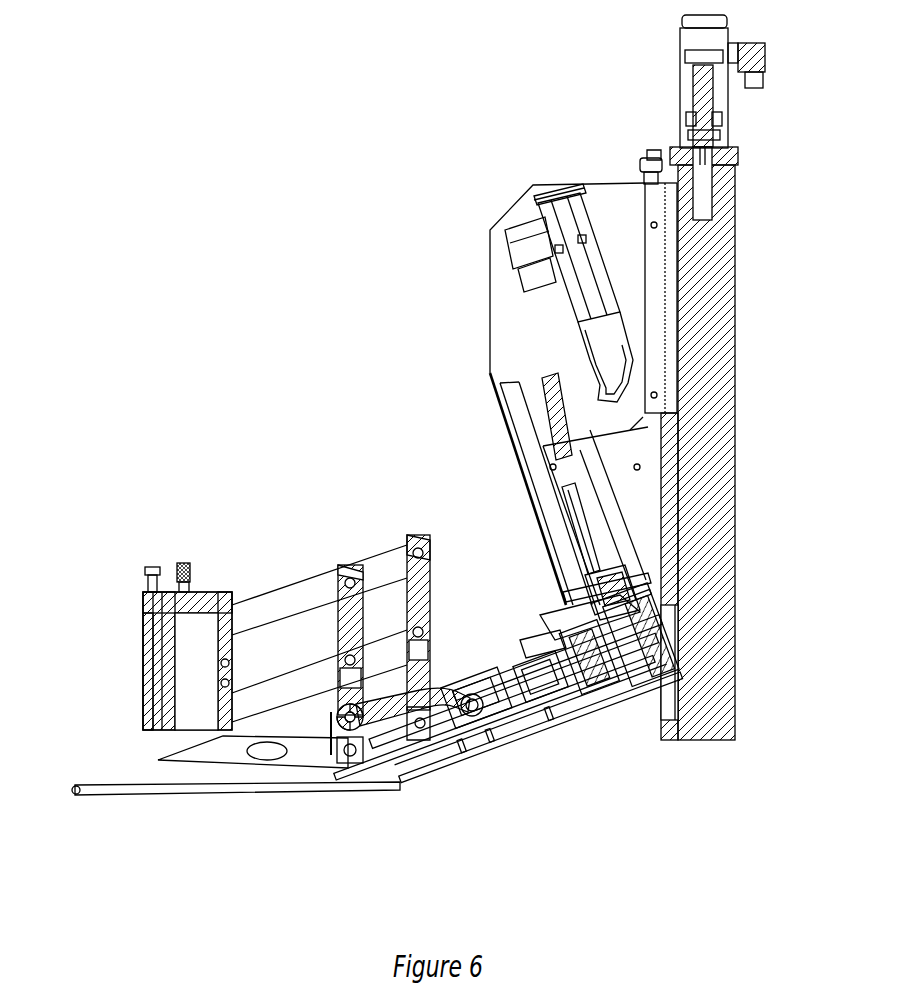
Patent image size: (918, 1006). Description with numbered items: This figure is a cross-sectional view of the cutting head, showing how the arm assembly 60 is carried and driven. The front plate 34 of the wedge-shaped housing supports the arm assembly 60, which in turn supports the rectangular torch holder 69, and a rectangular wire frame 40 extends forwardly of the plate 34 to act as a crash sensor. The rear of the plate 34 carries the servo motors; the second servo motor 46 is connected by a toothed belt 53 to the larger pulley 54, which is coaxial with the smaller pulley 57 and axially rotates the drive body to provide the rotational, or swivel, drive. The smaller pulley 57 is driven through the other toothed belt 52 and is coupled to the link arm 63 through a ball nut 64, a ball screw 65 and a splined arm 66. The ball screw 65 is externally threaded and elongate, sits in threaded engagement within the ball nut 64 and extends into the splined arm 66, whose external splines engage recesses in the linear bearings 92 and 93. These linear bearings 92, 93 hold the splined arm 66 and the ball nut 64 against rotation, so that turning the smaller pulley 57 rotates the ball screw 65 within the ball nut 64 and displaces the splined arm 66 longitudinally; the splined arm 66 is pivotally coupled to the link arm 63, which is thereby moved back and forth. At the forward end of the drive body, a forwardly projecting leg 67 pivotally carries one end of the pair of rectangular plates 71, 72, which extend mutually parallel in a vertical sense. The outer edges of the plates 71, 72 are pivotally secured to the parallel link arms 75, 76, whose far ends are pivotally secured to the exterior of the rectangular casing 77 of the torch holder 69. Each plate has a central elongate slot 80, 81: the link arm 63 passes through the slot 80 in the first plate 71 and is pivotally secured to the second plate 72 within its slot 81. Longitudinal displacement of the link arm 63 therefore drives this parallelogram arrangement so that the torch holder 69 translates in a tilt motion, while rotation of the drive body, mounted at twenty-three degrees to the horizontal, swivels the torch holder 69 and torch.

The front plate 34 is at (552, 508).
The rectangular wire frame 40 is at (205, 792).
The second servo motor 46 is at (560, 240).
The toothed belt 52 is at (582, 475).
The toothed belt 53 is at (581, 535).
The larger pulley 54 is at (652, 738).
The smaller pulley 57 is at (640, 618).
The arm assembly 60 is at (322, 500).
The link arm 63 is at (458, 692).
The ball nut 64 is at (580, 720).
The ball screw 65 is at (545, 720).
The splined arm 66 is at (515, 720).
The forwardly projecting leg 67 is at (395, 750).
The torch holder 69 is at (212, 600).
The rectangular plate 71 is at (430, 580).
The rectangular plate 72 is at (340, 598).
The link arm 75 is at (272, 690).
The link arm 76 is at (273, 598).
The rectangular casing 77 is at (147, 660).
The central elongate slot 80 is at (432, 660).
The central elongate slot 81 is at (345, 770).
The linear bearing 92 is at (515, 662).
The linear bearing 93 is at (555, 640).